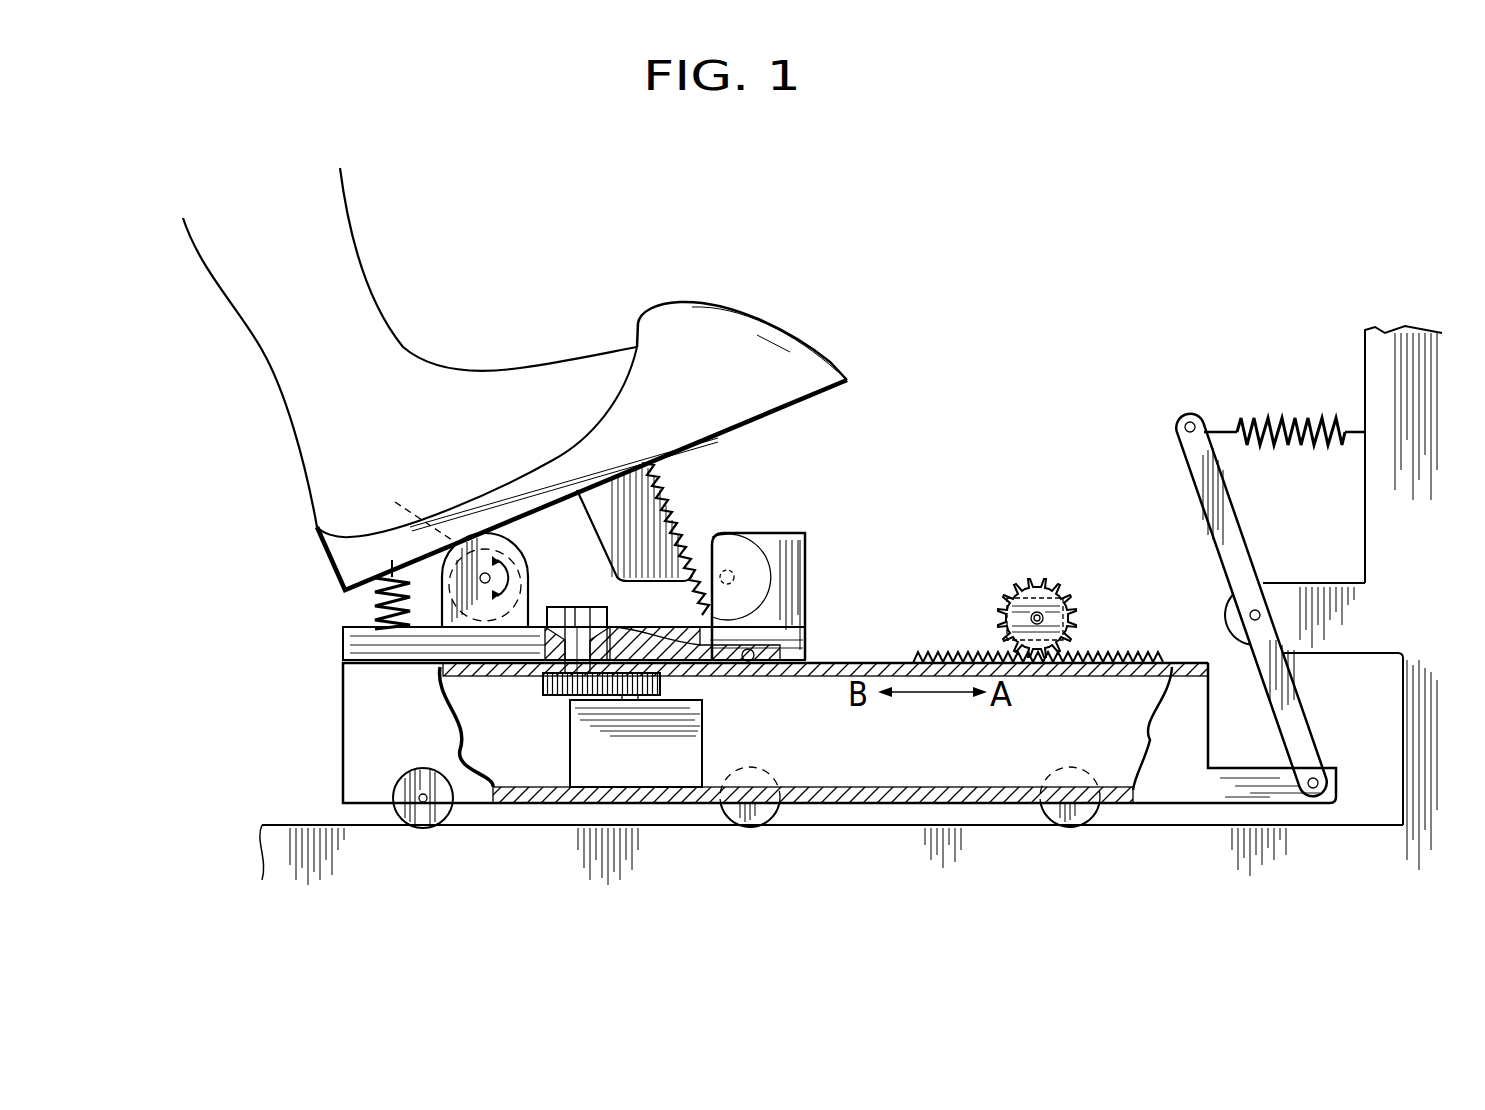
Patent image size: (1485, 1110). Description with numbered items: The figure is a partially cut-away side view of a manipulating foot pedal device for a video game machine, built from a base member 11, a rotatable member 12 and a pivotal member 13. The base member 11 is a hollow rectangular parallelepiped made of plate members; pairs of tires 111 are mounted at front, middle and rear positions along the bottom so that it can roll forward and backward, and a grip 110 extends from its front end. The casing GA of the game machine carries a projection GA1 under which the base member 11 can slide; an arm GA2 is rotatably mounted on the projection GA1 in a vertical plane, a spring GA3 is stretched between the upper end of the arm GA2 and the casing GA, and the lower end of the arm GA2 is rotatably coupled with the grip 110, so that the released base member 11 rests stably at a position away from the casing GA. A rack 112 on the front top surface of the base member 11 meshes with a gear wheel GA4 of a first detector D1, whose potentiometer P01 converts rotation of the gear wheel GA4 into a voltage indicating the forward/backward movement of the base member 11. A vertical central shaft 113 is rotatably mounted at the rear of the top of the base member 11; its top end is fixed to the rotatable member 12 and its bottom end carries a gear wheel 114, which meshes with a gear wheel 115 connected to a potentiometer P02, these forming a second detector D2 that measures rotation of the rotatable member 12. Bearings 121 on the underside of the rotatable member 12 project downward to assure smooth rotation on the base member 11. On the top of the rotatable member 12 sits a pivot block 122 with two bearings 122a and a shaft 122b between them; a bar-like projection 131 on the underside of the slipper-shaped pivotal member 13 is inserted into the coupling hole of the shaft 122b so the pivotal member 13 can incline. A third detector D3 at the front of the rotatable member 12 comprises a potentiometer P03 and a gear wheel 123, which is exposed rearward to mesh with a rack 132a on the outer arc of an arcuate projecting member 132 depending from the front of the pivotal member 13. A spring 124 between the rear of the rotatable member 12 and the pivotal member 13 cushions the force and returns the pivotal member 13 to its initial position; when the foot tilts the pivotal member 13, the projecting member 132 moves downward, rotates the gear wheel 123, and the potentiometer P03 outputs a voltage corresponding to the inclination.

The base member 11 is at (338, 746).
The grip 110 is at (1243, 797).
The tires 111 is at (1047, 830).
The rack 112 is at (928, 641).
The central shaft 113 is at (545, 672).
The gear wheel 114 is at (557, 697).
The gear wheel 115 is at (662, 682).
The rotatable member 12 is at (338, 647).
The bearings 121 is at (405, 668).
The pivot block 122 is at (526, 526).
The bearings 122a is at (493, 572).
The shaft 122b is at (530, 608).
The gear wheel 123 is at (705, 545).
The spring 124 is at (373, 601).
The pivotal member 13 is at (322, 556).
The bar-like projection 131 is at (411, 501).
The projecting member 132 is at (648, 460).
The rack 132a is at (668, 476).
The potentiometer P01 is at (1037, 578).
The potentiometer P02 is at (705, 744).
The potentiometer P03 is at (808, 557).
The casing GA is at (1360, 513).
The projection GA1 is at (1325, 650).
The arm GA2 is at (1202, 516).
The spring GA3 is at (1272, 412).
The gear wheel GA4 is at (1080, 620).
The first detector D1 is at (1154, 573).
The second detector D2 is at (786, 719).
The third detector D3 is at (812, 518).